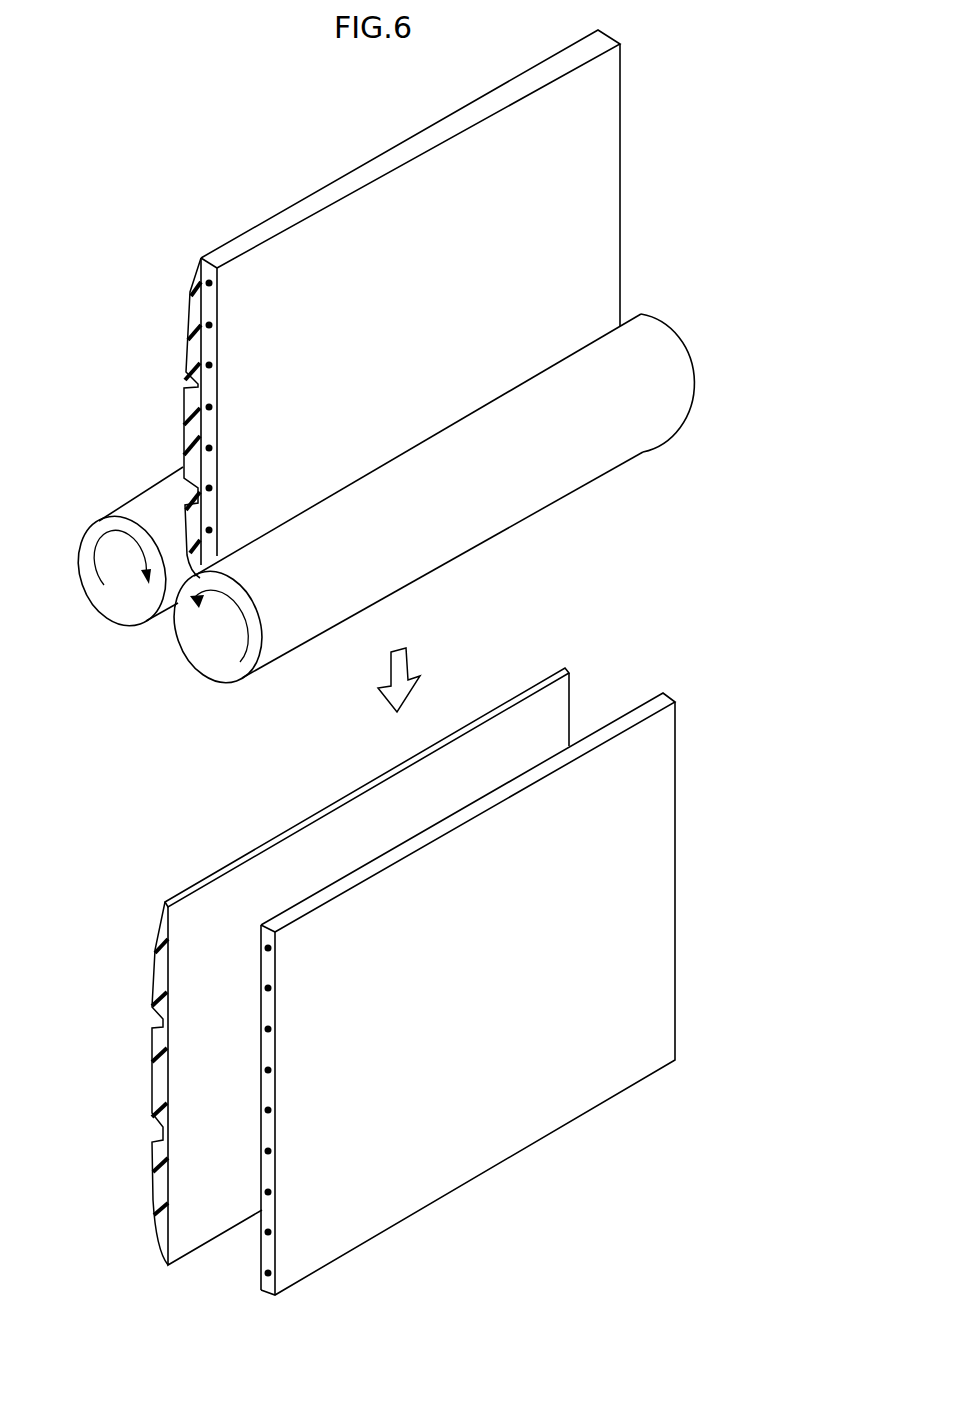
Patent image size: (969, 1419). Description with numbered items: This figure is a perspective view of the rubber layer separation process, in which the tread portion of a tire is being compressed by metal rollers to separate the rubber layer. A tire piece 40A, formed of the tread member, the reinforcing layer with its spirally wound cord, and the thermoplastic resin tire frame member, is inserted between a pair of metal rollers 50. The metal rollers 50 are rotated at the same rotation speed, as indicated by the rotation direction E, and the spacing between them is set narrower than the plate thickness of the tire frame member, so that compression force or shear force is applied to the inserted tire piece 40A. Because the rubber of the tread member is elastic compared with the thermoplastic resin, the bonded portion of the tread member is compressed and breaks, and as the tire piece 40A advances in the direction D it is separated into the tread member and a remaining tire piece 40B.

The tire piece 40A is at (219, 153).
The tire piece 40B is at (412, 1198).
The metal rollers 50 is at (118, 597).
The roller rotation direction E is at (233, 610).
The conveying direction D is at (404, 665).